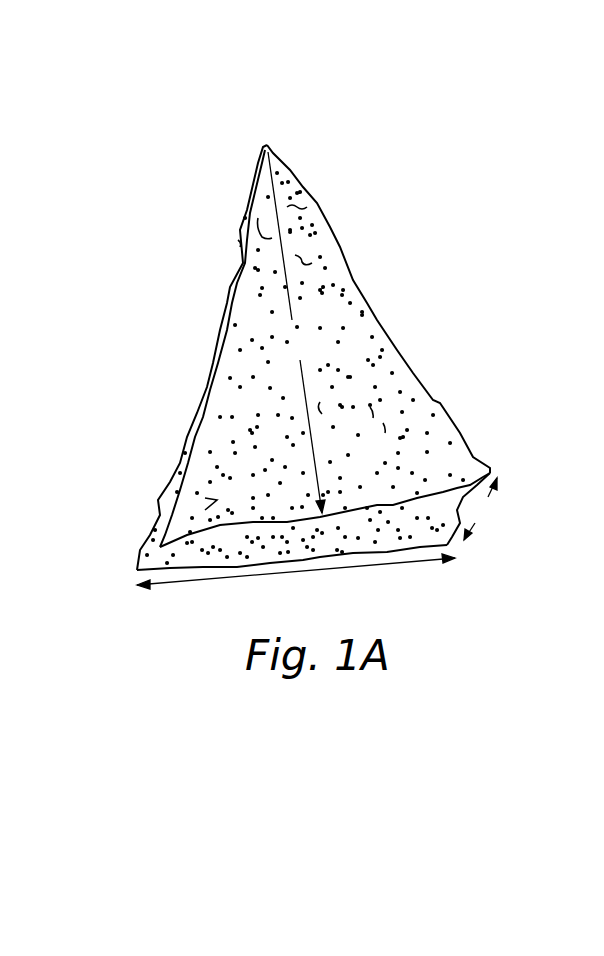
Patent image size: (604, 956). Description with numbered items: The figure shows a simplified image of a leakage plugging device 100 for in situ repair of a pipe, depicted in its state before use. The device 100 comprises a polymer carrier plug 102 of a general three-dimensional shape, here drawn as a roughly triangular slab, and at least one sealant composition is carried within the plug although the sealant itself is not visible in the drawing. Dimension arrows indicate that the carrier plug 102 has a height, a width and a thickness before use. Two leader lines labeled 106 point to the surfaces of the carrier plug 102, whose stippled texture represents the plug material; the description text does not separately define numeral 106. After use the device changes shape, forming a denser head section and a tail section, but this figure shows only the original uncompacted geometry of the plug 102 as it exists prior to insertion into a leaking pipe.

The leakage plugging device 100 is at (365, 331).
The polymer carrier plug 102 is at (353, 282).
The textured surface 106 is at (352, 356).